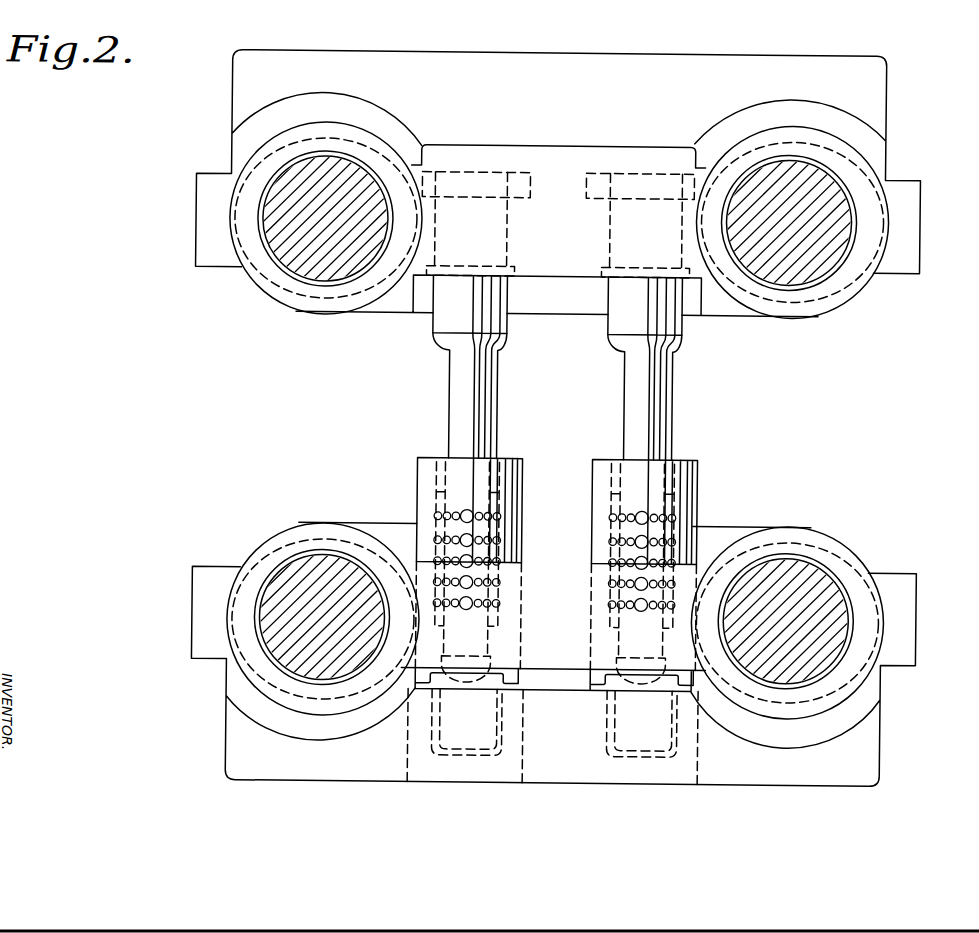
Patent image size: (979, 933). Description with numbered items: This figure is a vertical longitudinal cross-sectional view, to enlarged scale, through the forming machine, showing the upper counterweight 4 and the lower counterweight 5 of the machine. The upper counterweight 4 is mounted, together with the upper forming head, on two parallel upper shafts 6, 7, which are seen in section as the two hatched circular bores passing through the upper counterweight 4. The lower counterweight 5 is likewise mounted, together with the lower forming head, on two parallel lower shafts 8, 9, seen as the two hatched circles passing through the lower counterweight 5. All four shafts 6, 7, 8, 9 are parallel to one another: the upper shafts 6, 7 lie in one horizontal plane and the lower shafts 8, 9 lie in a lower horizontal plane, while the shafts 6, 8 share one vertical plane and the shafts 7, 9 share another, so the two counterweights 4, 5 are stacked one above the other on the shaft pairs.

The upper counterweight 4 is at (870, 74).
The lower counterweight 5 is at (870, 736).
The upper shaft 6 is at (281, 246).
The upper shaft 7 is at (810, 240).
The lower shaft 8 is at (299, 595).
The lower shaft 9 is at (813, 587).